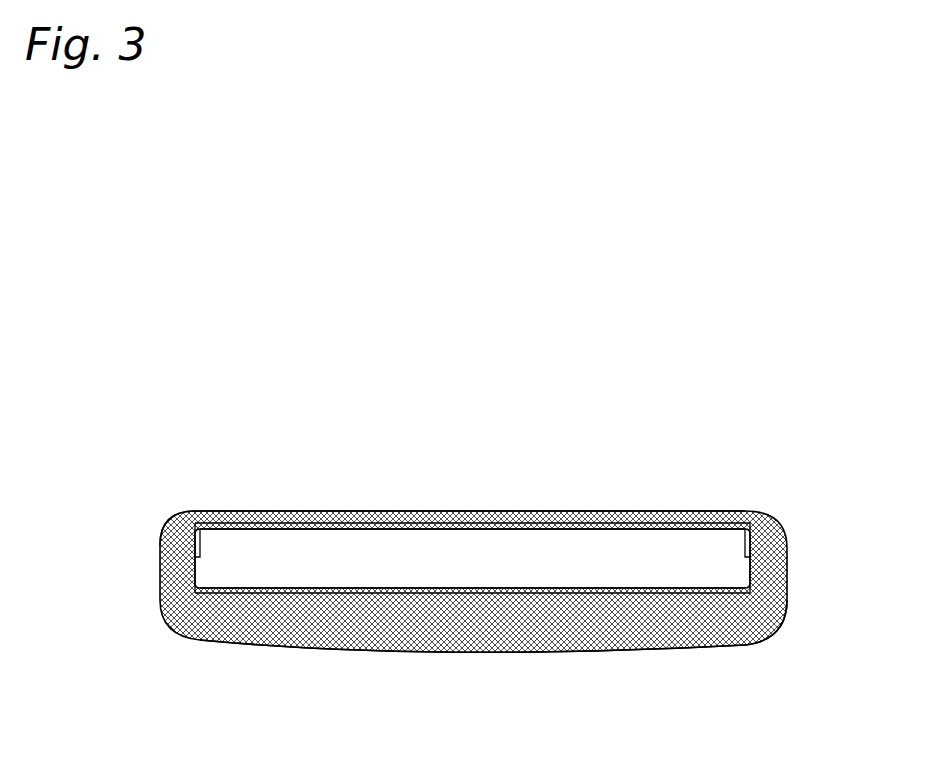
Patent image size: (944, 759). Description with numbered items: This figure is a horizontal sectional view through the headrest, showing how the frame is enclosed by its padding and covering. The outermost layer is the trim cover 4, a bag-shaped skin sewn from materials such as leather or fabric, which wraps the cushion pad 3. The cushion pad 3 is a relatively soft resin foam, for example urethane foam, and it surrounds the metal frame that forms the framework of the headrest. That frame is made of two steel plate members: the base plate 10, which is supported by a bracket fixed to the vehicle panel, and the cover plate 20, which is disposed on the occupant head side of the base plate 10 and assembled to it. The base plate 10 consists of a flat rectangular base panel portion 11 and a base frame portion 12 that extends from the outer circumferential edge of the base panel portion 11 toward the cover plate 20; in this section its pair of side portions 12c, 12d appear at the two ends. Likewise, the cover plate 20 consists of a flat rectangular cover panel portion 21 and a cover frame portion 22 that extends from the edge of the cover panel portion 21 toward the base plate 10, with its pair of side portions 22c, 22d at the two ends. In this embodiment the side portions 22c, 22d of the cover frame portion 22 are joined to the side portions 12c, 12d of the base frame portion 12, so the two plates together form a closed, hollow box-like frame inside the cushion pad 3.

The cushion pad 3 is at (659, 630).
The trim cover 4 is at (578, 651).
The base plate 10 is at (365, 519).
The base panel portion 11 is at (447, 526).
The base frame portion 12 is at (190, 529).
The side portion of base frame portion 12c is at (198, 549).
The side portion of base frame portion 12d is at (758, 541).
The cover plate 20 is at (368, 594).
The cover panel portion 21 is at (445, 591).
The cover frame portion 22 is at (761, 578).
The side portion of cover frame portion 22c is at (197, 579).
The side portion of cover frame portion 22d is at (771, 559).